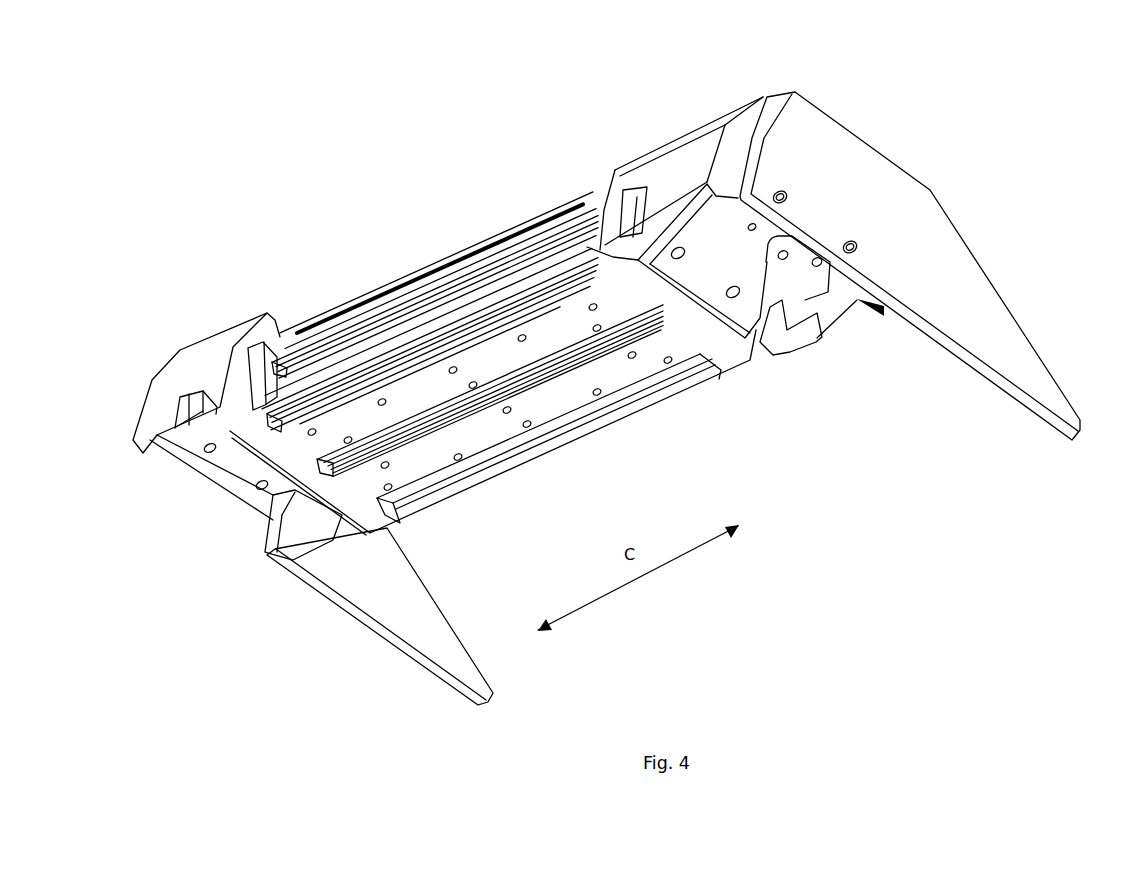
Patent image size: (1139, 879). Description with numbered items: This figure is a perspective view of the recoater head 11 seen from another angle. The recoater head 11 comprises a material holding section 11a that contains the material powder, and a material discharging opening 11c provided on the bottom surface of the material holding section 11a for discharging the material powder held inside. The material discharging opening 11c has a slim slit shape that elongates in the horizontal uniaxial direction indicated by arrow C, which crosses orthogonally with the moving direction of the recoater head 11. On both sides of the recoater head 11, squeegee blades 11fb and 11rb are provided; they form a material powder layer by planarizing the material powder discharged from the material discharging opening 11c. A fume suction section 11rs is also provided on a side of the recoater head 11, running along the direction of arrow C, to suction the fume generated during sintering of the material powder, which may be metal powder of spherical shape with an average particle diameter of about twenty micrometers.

The recoater head 11 is at (606, 398).
The material holding section 11a is at (725, 357).
The squeegee blade 11fb is at (520, 468).
The material discharging opening 11c is at (615, 366).
The squeegee blade 11rb is at (297, 398).
The fume suction section 11rs is at (468, 260).